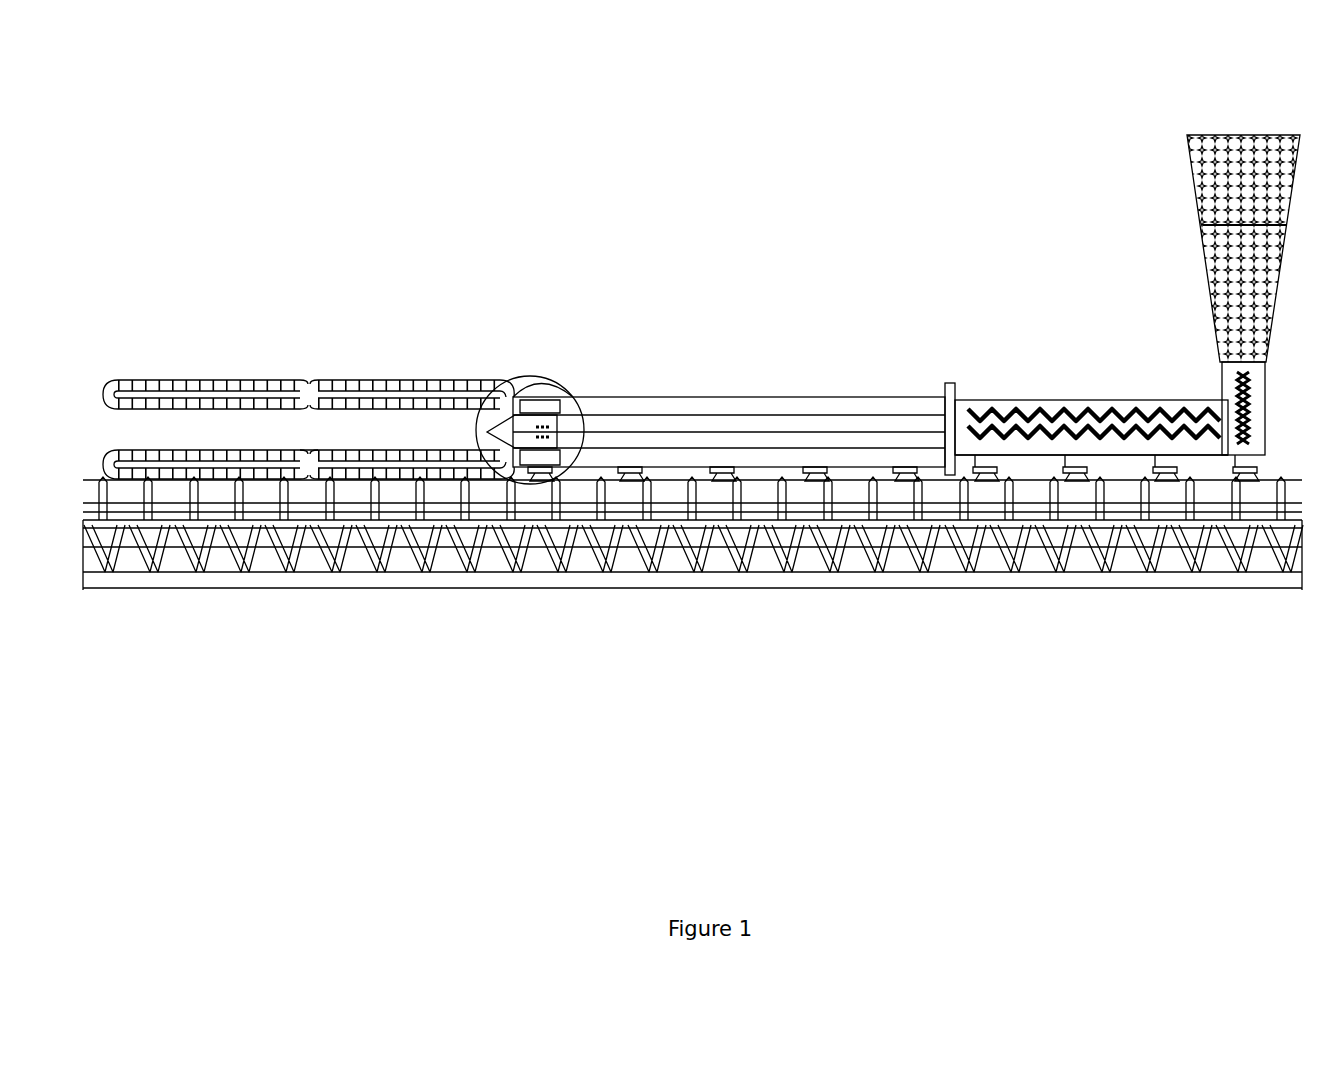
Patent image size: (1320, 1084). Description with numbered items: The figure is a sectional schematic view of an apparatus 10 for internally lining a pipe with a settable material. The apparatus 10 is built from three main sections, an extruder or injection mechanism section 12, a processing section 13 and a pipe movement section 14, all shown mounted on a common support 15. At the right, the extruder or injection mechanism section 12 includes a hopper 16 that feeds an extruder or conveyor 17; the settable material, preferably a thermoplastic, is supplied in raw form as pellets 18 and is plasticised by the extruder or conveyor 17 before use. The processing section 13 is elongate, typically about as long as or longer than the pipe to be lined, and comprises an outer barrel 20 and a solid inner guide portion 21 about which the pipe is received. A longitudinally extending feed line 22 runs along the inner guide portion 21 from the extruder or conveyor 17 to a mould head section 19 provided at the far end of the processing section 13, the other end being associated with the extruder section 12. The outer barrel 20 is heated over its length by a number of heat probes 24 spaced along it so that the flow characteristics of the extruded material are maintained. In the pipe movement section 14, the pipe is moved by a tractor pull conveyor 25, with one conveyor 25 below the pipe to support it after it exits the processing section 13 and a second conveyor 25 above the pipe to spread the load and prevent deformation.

The apparatus 10 is at (664, 222).
The extruder or injection mechanism section 12 is at (1134, 272).
The processing section 13 is at (734, 369).
The pipe movement section 14 is at (308, 341).
The common support 15 is at (83, 597).
The hopper 16 is at (1200, 229).
The extruder or conveyor 17 is at (1100, 393).
The pellets 18 is at (1160, 172).
The mould head section 19 is at (530, 485).
The outer barrel 20 is at (840, 392).
The inner guide portion 21 is at (752, 418).
The feed line 22 is at (896, 400).
The heat probes 24 is at (604, 388).
The tractor pull conveyor 25 is at (404, 374).